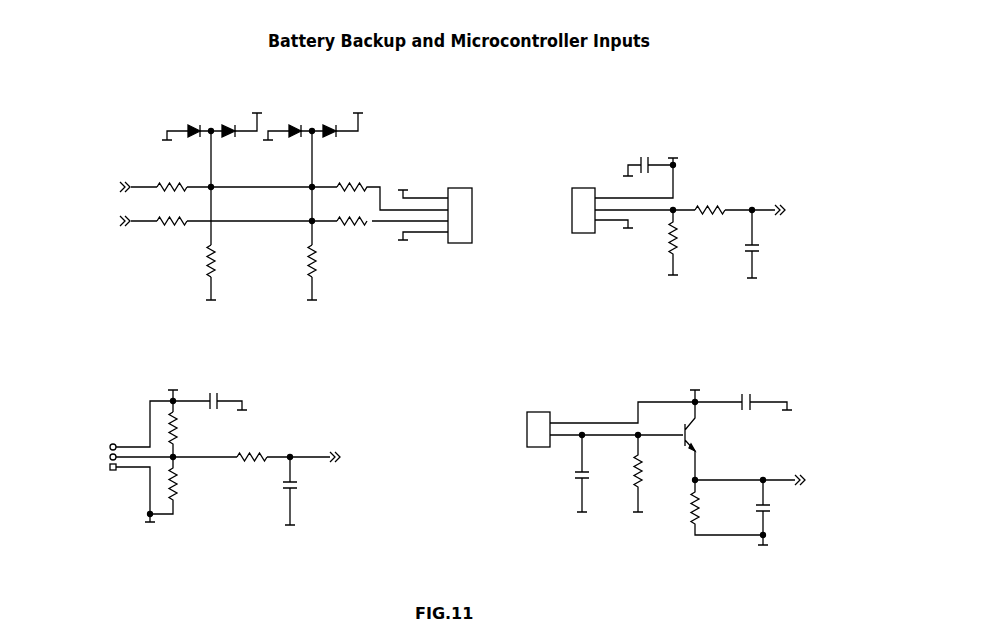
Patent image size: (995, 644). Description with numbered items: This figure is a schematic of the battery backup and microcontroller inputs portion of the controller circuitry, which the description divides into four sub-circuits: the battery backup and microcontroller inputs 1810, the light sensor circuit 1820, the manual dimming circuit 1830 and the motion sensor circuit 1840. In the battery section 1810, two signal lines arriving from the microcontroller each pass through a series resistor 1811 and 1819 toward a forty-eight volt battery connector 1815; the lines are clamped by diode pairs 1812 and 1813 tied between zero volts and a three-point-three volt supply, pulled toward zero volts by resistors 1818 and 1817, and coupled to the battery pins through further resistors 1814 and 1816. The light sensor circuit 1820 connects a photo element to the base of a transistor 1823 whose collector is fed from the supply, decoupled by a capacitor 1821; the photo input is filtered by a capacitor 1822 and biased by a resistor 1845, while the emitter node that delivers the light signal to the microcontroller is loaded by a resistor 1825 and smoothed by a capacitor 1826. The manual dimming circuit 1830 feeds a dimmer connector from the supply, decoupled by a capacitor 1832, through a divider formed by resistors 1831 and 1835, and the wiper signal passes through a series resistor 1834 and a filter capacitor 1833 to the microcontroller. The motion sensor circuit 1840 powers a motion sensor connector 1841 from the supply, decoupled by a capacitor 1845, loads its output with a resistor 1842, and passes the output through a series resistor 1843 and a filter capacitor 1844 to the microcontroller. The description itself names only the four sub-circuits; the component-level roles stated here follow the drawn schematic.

The Battery Backup and Microcontroller Inputs 1810 is at (288, 199).
The resistor 1811 is at (173, 180).
The clamping diode pair 1812 is at (213, 125).
The clamping diode pair 1813 is at (314, 125).
The resistor 1814 is at (354, 180).
The 48V battery 1815 is at (449, 229).
The resistor 1816 is at (354, 214).
The resistor 1817 is at (333, 261).
The resistor 1818 is at (232, 261).
The resistor 1819 is at (173, 214).
The Light Sensor circuit 1820 is at (685, 456).
The capacitor 1821 is at (761, 394).
The capacitor 1822 is at (604, 479).
The transistor 1823 is at (714, 441).
The resistor 1825 is at (727, 507).
The capacitor 1826 is at (784, 507).
The Manual Dimming circuit 1830 is at (235, 445).
The resistor 1831 is at (193, 434).
The capacitor 1832 is at (223, 394).
The capacitor 1833 is at (272, 496).
The resistor 1834 is at (251, 446).
The resistor 1835 is at (184, 485).
The Motion sensor circuit 1840 is at (702, 315).
The motion sensor connector 1841 is at (602, 223).
The resistor 1842 is at (692, 248).
The resistor 1843 is at (711, 202).
The capacitor 1844 is at (778, 249).
The capacitor / resistor 1845 is at (652, 327).